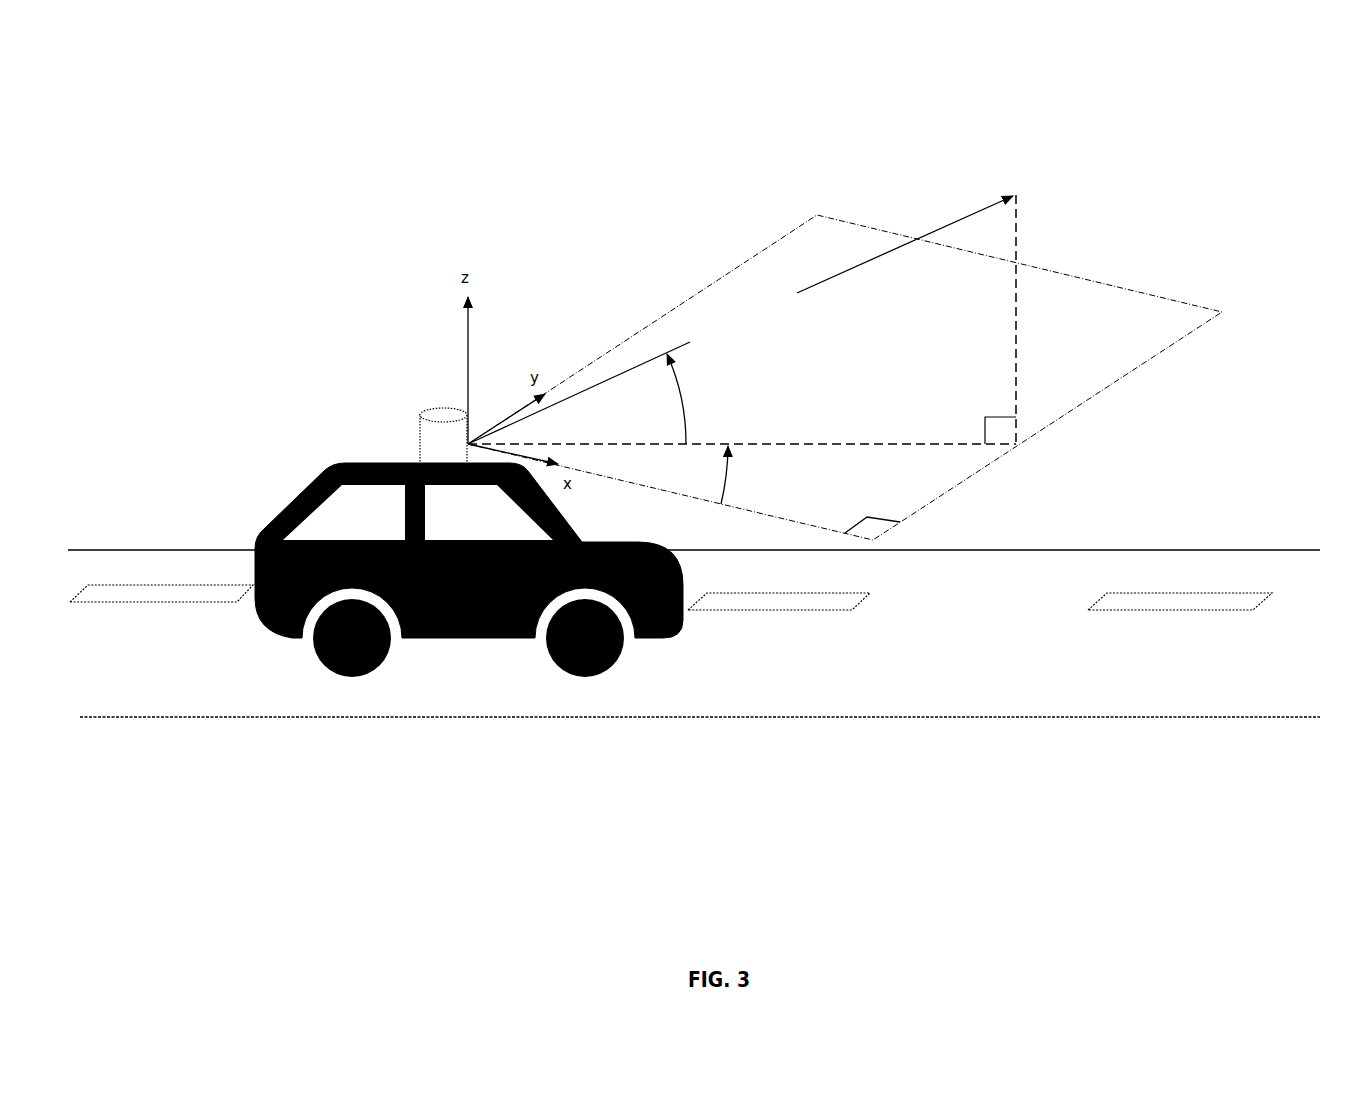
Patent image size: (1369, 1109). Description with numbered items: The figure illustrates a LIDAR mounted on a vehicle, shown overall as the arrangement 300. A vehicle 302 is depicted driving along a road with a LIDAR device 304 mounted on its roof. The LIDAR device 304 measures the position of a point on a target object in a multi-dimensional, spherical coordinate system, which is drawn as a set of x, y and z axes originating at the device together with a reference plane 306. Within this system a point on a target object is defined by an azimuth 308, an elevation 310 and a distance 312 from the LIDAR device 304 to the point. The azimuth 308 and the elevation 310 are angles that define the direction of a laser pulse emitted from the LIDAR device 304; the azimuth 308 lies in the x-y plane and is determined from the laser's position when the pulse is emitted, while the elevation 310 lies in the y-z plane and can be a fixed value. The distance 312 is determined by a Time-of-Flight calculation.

The environment / scenario 300 is at (198, 101).
The vehicle 302 is at (305, 488).
The LIDAR device 304 is at (421, 442).
The field of view plane 306 is at (845, 377).
The azimuth (θ) 308 is at (787, 475).
The elevation (φ) 310 is at (745, 399).
The distance 312 is at (740, 320).